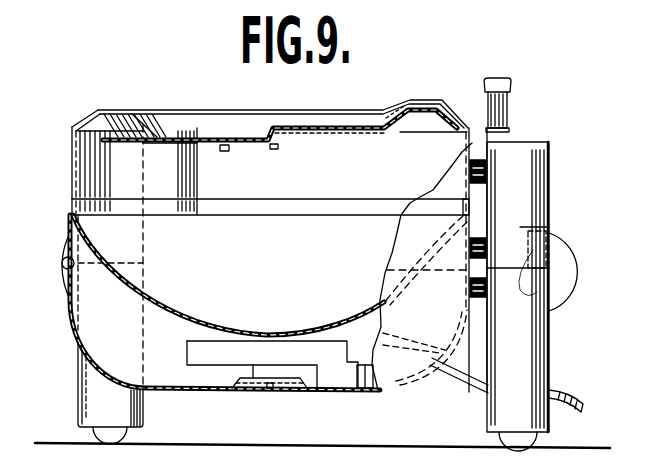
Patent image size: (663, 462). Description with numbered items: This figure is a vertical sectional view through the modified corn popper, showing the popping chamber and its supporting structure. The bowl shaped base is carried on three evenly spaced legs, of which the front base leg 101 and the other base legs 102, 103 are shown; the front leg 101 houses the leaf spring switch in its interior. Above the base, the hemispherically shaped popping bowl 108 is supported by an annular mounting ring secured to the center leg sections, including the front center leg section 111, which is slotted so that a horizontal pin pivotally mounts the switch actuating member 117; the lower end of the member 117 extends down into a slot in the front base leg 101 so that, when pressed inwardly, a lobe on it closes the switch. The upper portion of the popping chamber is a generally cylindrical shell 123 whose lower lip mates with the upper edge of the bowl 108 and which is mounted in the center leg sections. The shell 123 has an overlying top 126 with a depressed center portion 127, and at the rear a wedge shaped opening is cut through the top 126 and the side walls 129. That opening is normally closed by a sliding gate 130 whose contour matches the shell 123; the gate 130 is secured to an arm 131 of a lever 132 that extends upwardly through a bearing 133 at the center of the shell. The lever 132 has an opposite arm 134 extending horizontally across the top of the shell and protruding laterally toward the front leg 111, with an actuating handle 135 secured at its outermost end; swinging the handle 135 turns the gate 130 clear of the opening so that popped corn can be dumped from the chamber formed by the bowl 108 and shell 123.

The front base leg 101 is at (549, 357).
The base leg 102 is at (78, 377).
The base leg 103 is at (145, 404).
The popping bowl 108 is at (334, 321).
The front center leg section 111 is at (549, 198).
The switch actuating member 117 is at (574, 281).
The cylindrical shell 123 is at (474, 149).
The top 126 is at (334, 144).
The depressed center portion 127 is at (213, 123).
The side walls 129 is at (300, 185).
The sliding gate 130 is at (87, 178).
The arm 131 is at (222, 150).
The lever 132 is at (307, 125).
The bearing 133 is at (281, 145).
The arm 134 is at (374, 120).
The actuating handle 135 is at (509, 98).